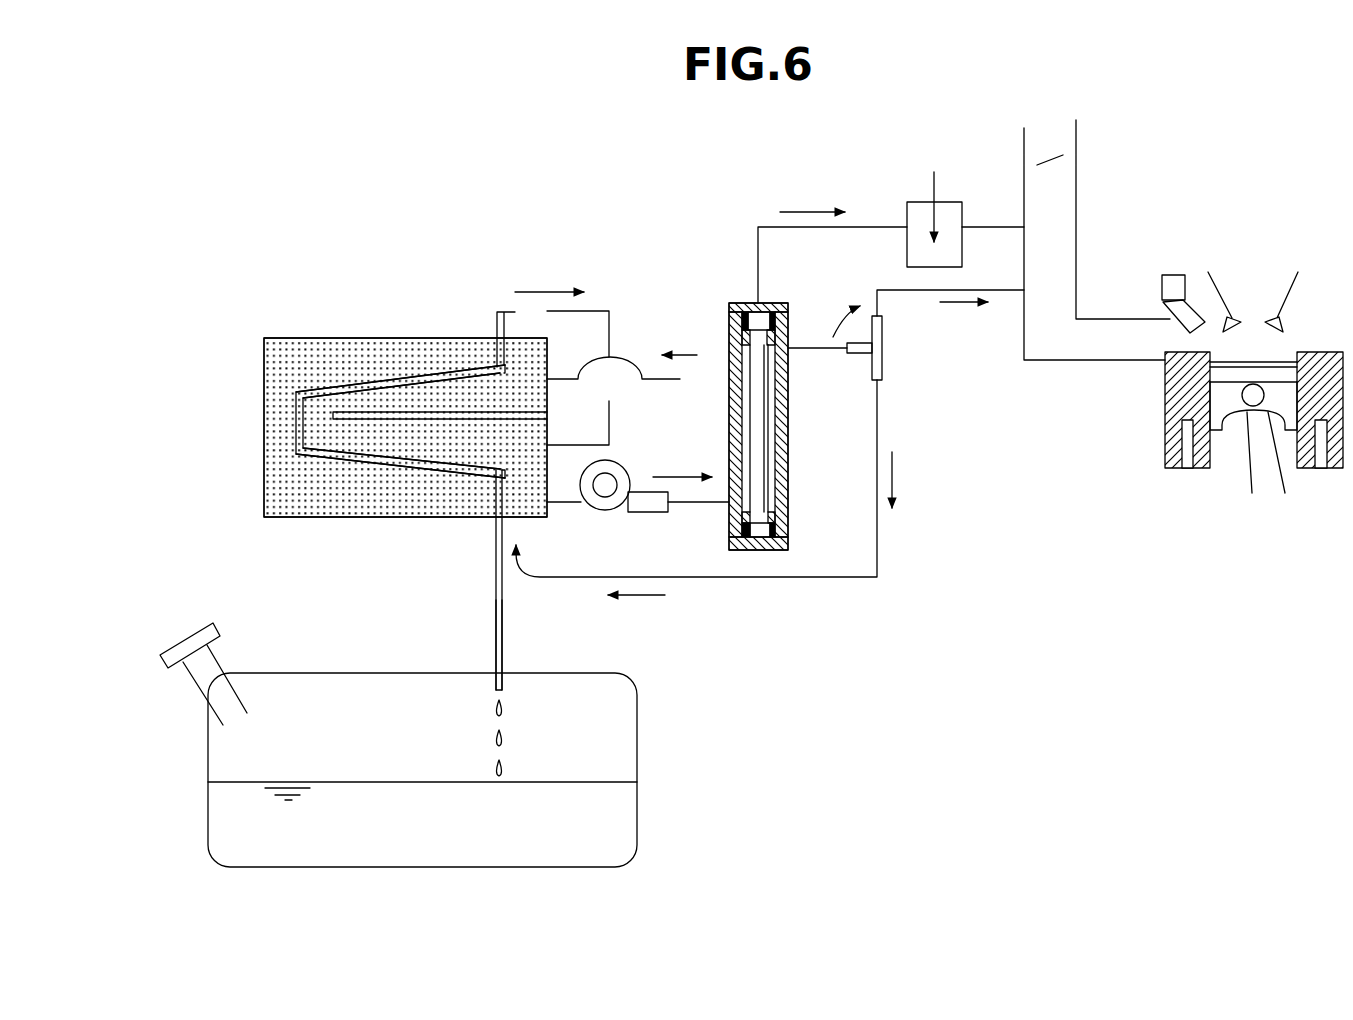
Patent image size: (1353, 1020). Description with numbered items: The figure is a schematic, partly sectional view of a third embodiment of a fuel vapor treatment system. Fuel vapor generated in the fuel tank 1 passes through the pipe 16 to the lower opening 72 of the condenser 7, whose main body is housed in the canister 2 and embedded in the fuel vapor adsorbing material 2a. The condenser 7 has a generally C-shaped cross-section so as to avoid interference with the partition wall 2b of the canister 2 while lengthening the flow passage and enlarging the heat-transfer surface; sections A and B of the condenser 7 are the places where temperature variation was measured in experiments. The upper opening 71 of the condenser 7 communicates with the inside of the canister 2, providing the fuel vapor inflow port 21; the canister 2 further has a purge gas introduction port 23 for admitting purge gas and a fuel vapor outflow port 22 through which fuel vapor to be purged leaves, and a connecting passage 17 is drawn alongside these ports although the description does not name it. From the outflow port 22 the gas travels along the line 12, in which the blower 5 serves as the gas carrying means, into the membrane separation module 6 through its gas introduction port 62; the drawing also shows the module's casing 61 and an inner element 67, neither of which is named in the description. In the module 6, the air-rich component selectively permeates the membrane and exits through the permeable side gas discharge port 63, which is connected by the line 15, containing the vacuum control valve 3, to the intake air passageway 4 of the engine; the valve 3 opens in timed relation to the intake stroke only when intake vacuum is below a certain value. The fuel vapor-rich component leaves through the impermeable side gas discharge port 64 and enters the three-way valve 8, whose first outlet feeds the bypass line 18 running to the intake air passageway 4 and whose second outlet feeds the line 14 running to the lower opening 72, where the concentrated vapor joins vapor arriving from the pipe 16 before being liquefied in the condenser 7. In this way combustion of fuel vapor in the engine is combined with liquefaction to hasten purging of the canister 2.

The fuel tank 1 is at (637, 727).
The canister 2 is at (331, 334).
The fuel vapor adsorbing material 2a is at (280, 490).
The partition wall 2b is at (395, 422).
The vacuum control valve 3 is at (945, 200).
The intake air passageway 4 is at (1077, 210).
The blower 5 is at (630, 474).
The membrane separation module 6 is at (791, 405).
The condenser 7 is at (291, 413).
The three-way valve 8 is at (883, 361).
The line 12 is at (683, 504).
The line 14 is at (848, 580).
The line 15 is at (875, 226).
The pipe 16 is at (503, 665).
The passage 17 is at (612, 328).
The bypass line 18 is at (925, 294).
The fuel vapor inflow port 21 is at (549, 442).
The fuel vapor outflow port 22 is at (549, 504).
The purge gas introduction port 23 is at (549, 378).
The heater casing 61 is at (780, 432).
The gas introduction port 62 is at (735, 513).
The permeable side gas discharge port 63 is at (757, 310).
The impermeable side gas discharge port 64 is at (766, 312).
The heating element 67 is at (766, 476).
The upper opening 71 is at (494, 318).
The lower opening 72 is at (494, 530).
The section A is at (380, 378).
The section B is at (345, 462).